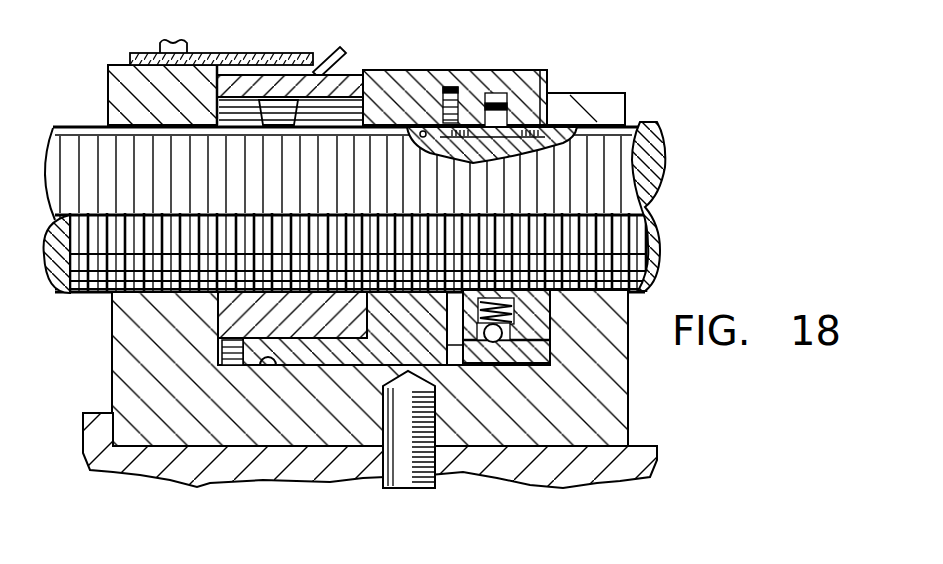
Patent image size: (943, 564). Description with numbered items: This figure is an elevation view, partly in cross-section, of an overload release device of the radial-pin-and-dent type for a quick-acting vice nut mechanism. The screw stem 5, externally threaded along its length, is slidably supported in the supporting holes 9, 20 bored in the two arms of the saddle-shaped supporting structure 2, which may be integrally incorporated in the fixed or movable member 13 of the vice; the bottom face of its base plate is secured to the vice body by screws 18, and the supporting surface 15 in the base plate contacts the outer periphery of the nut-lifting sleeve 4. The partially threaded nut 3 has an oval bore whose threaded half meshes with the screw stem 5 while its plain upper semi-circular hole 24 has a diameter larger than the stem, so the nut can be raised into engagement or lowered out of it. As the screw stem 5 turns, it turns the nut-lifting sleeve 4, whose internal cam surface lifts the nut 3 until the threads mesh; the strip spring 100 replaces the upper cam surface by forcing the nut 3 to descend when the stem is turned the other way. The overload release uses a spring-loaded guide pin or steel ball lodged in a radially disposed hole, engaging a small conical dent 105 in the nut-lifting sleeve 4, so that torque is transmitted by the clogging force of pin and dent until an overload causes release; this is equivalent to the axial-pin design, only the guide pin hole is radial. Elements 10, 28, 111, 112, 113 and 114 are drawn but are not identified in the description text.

The supporting structure 2 is at (595, 108).
The partially threaded nut 3 is at (258, 128).
The nut-lifting sleeve 4 is at (390, 78).
The screw stem 5 is at (64, 145).
The supporting hole 9 is at (170, 128).
The sleeve 10 is at (380, 128).
The fixed (or movable) member of the vice 13 is at (97, 418).
The supporting surface 15 is at (278, 363).
The screws 18 is at (436, 421).
The supporting hole 20 is at (640, 125).
The semi-circular hole 24 is at (287, 128).
The collar 28 is at (412, 130).
The strip spring 100 is at (268, 55).
The conical dent 105 is at (505, 363).
The spring 111 is at (493, 100).
The piston 112 is at (527, 100).
The spring 113 is at (497, 303).
The ball 114 is at (508, 330).